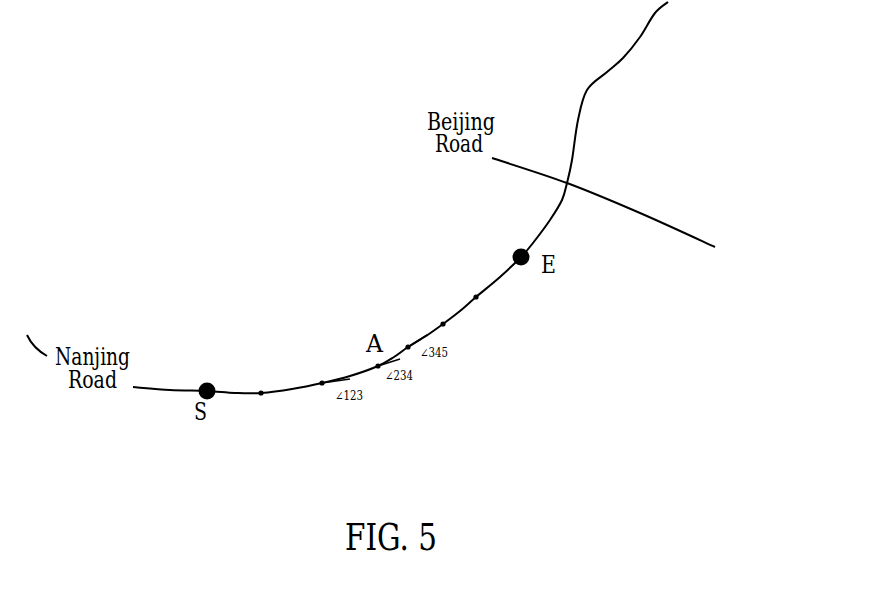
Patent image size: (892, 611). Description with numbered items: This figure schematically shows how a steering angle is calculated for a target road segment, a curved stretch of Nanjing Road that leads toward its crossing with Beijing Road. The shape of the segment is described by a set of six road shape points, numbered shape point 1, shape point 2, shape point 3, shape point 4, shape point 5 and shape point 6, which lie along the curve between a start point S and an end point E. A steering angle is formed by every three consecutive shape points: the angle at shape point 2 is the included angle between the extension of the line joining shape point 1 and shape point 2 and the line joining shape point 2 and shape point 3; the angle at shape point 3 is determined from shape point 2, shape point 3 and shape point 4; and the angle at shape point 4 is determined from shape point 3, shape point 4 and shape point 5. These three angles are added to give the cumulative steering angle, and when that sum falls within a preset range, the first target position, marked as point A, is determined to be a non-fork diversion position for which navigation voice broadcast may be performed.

The shape point 1 is at (263, 407).
The shape point 2 is at (326, 402).
The shape point 3 is at (382, 385).
The shape point 4 is at (418, 362).
The shape point 5 is at (453, 342).
The shape point 6 is at (486, 309).